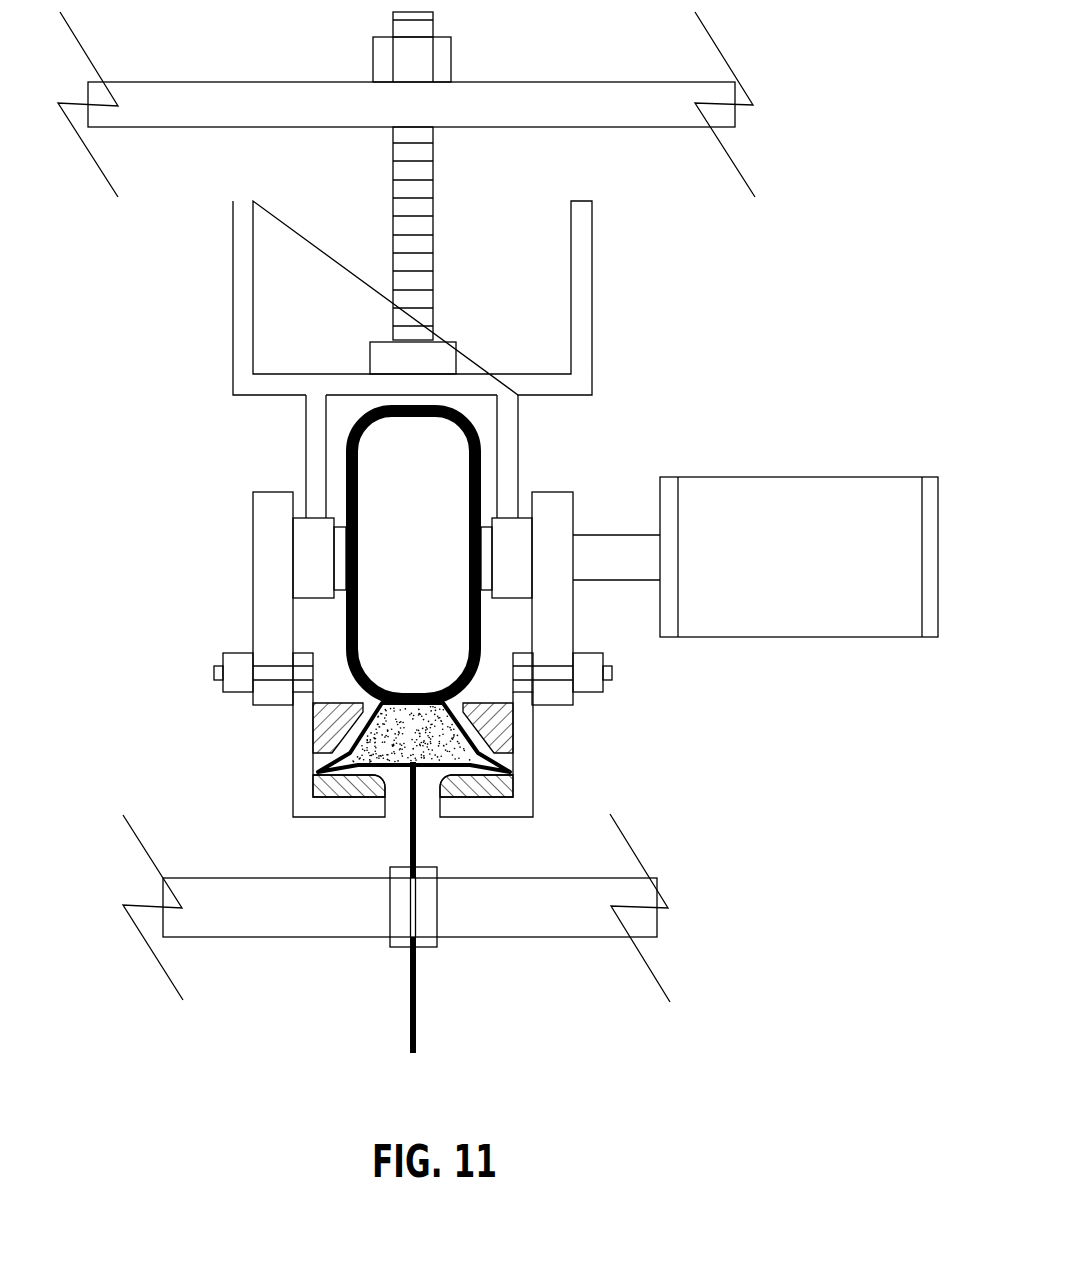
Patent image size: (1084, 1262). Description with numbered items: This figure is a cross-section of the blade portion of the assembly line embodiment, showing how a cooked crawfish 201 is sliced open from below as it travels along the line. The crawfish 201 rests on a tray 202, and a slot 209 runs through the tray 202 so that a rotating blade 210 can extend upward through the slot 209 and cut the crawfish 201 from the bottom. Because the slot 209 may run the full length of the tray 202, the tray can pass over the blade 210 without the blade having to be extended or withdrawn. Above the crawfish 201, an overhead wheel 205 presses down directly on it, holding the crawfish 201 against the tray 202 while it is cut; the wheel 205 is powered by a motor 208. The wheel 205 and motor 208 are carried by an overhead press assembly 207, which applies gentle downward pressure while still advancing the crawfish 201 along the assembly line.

The cooked crawfish 201 is at (382, 746).
The tray 202 is at (467, 791).
The overhead wheel 205 is at (413, 555).
The overhead press assembly 207 is at (634, 192).
The motor 208 is at (813, 576).
The slot 209 is at (405, 821).
The rotating blade 210 is at (417, 983).